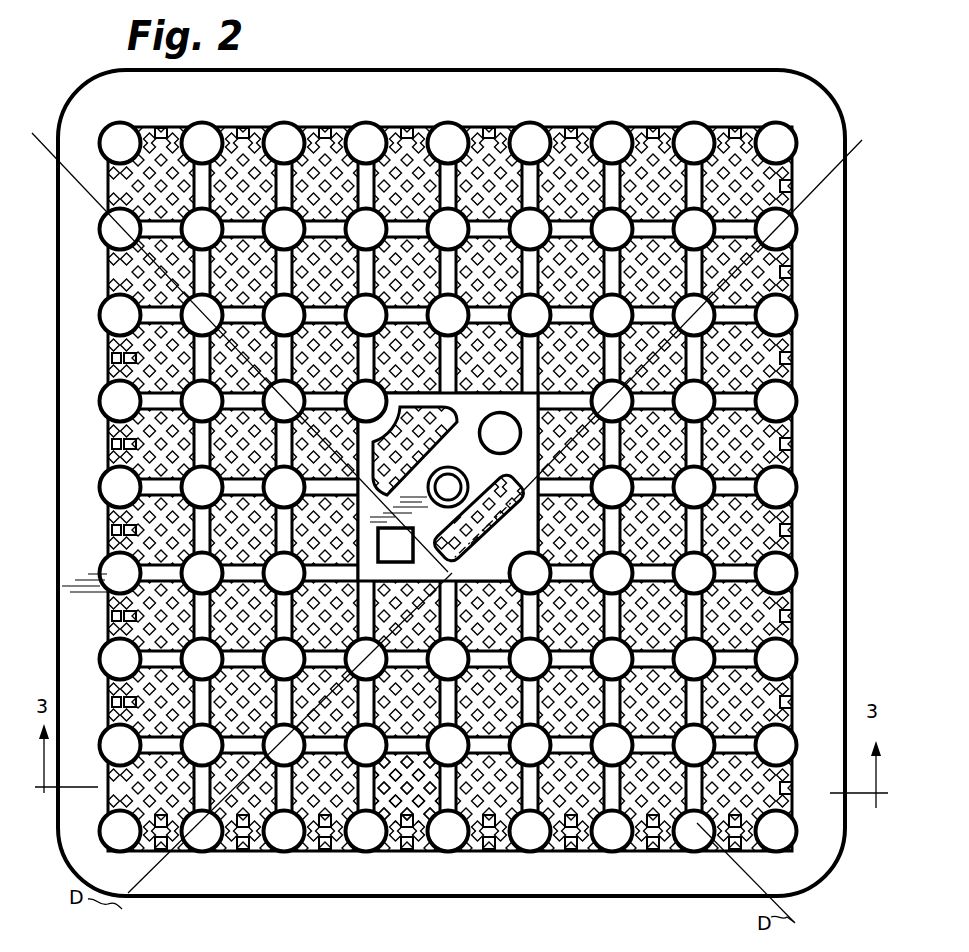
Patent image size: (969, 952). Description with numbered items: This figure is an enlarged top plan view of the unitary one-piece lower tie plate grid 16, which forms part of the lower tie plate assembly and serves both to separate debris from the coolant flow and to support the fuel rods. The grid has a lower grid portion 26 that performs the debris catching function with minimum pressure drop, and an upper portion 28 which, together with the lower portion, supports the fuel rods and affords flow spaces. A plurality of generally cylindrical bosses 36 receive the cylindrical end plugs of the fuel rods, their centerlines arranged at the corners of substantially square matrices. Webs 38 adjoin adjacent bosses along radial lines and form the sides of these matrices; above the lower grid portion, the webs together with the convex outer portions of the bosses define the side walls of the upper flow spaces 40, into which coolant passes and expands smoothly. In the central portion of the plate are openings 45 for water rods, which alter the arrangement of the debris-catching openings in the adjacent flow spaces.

The lower tie plate grid 16 is at (708, 906).
The lower grid portion 26 is at (207, 845).
The upper portion 28 is at (792, 818).
The cylindrical bosses 36 is at (421, 778).
The webs 38 is at (488, 745).
The upper flow spaces 40 is at (284, 745).
The openings for water rods 45 is at (492, 428).